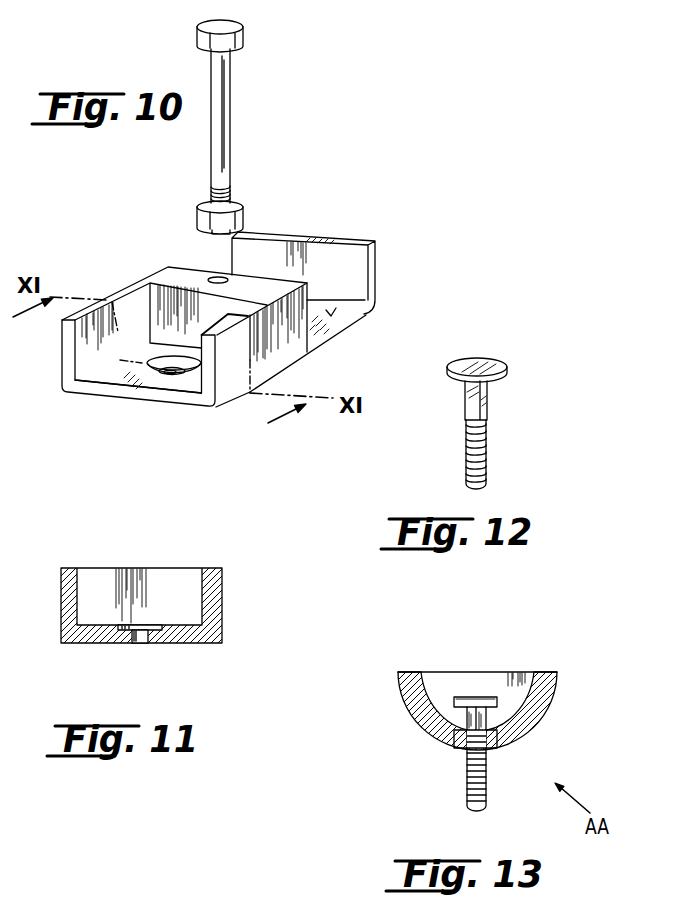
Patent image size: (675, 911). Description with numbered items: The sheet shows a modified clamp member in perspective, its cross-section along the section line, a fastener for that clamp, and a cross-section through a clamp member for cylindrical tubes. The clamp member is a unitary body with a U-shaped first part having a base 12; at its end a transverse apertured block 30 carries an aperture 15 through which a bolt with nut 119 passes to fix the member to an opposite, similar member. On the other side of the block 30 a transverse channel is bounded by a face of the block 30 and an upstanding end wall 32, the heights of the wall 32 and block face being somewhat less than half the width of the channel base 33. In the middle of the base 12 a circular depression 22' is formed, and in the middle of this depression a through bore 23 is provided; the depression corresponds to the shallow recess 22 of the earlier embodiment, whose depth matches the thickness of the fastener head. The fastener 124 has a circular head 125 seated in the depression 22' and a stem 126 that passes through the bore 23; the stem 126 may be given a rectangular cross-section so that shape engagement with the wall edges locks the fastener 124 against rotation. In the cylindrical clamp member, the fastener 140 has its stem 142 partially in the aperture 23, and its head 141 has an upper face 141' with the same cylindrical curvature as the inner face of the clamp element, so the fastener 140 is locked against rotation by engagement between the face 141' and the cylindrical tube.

In FIG. 10, the bolt with nut 119 is at (225, 88).
In FIG. 10, the transverse apertured block 30 is at (214, 316).
In FIG. 11, the transverse apertured block 30 is at (163, 567).
In FIG. 10, the aperture 15 is at (220, 278).
In FIG. 10, the upstanding end wall 32 is at (347, 242).
In FIG. 10, the base of channel 33 is at (345, 309).
In FIG. 10, the through bore 23 is at (172, 368).
In FIG. 11, the through bore 23 is at (142, 640).
In FIG. 13, the through bore 23 is at (461, 763).
In FIG. 10, the base 12 is at (114, 378).
In FIG. 10, the circular depression 22' is at (165, 404).
In FIG. 11, the circular depression 22' is at (153, 605).
In FIG. 12, the fastener 124 is at (513, 403).
In FIG. 12, the circular head 125 is at (507, 370).
In FIG. 12, the stem 126 is at (488, 407).
In FIG. 13, the recess 22 is at (484, 711).
In FIG. 13, the fastener 140 is at (468, 718).
In FIG. 13, the head 141 is at (499, 672).
In FIG. 13, the upper face of head 141' is at (478, 662).
In FIG. 13, the stem 142 is at (462, 712).